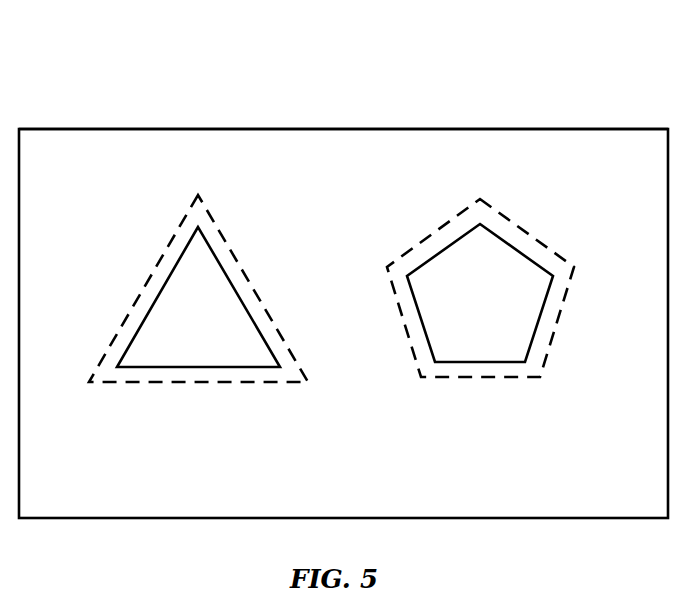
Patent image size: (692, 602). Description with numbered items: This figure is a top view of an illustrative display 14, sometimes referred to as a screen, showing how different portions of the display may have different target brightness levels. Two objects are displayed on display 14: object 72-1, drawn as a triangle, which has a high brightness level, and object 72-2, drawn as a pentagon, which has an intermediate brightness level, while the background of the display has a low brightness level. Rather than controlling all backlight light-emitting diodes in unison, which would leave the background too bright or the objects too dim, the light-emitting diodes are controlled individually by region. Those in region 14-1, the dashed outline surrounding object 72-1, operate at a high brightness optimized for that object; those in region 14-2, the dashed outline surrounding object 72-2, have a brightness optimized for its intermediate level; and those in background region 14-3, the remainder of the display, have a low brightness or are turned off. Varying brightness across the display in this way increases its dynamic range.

The display 14 is at (46, 68).
The region of the display 14-1 is at (242, 268).
The region of the display 14-2 is at (543, 362).
The background region 14-3 is at (595, 140).
The object 72-1 is at (172, 293).
The object 72-2 is at (537, 288).